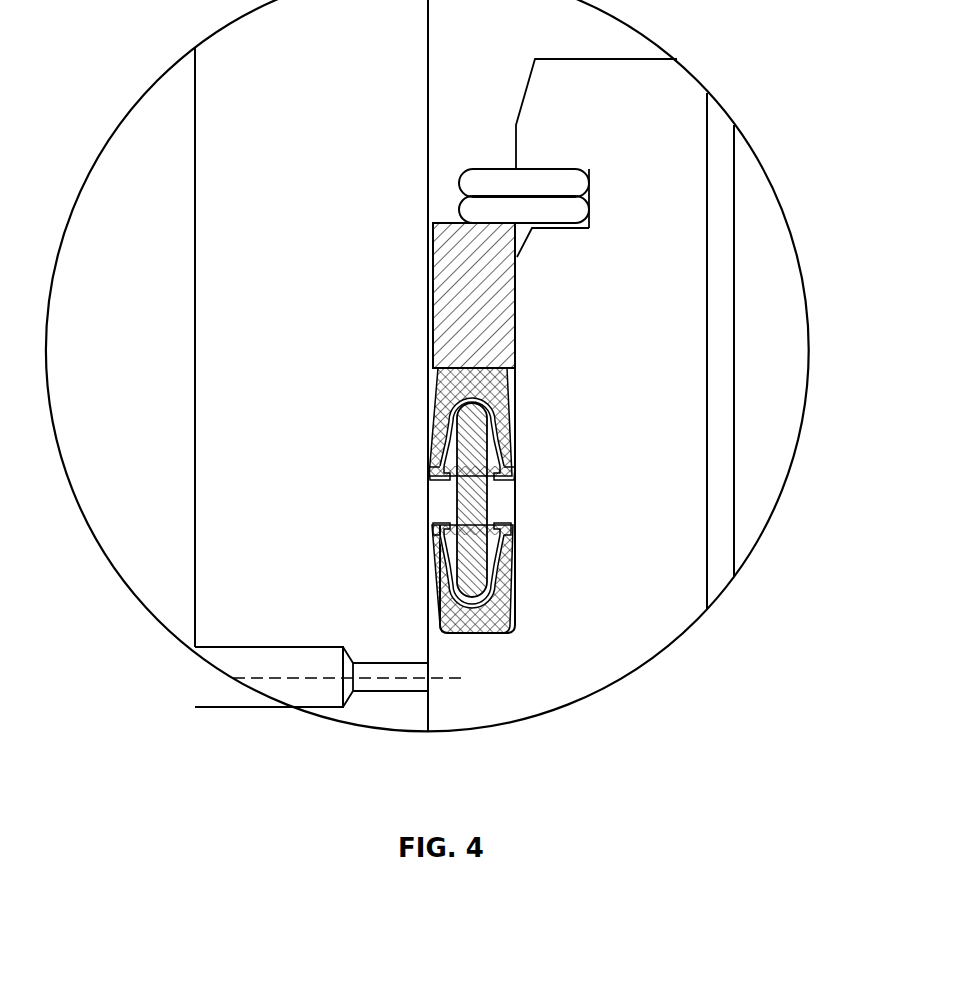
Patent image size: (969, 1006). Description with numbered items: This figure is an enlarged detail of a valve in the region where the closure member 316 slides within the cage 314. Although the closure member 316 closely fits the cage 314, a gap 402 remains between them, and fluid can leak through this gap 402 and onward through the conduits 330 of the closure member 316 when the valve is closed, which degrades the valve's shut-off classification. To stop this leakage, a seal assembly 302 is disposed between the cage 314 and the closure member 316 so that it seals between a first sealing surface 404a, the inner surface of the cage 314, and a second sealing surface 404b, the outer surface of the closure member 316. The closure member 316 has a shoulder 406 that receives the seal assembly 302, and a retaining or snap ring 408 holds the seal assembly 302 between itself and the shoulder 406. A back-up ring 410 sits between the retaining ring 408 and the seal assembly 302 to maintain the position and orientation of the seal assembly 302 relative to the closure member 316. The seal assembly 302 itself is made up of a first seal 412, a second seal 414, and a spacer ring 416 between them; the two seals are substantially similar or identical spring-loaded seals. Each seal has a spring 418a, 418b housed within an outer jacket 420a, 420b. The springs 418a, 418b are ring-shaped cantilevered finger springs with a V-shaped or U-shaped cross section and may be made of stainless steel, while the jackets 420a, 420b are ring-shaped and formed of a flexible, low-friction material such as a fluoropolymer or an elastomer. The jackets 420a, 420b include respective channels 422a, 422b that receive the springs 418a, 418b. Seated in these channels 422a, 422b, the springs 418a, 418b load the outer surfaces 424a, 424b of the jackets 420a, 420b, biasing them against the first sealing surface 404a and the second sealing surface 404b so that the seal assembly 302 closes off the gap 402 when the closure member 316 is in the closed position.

The seal assembly 302 is at (437, 195).
The cage 314 is at (228, 290).
The closure member 316 is at (652, 97).
The conduits 330 is at (720, 273).
The gap 402 is at (463, 719).
The first sealing surface 404a is at (428, 85).
The second sealing surface 404b is at (428, 702).
The shoulder 406 is at (482, 636).
The retaining ring 408 is at (497, 182).
The back-up ring 410 is at (437, 304).
The first seal 412 is at (468, 522).
The second seal 414 is at (511, 394).
The spacer ring 416 is at (487, 495).
The spring 418a is at (503, 560).
The spring 418b is at (500, 447).
The outer jacket 420a is at (437, 617).
The outer jacket 420b is at (440, 376).
The channel 422a is at (437, 540).
The channel 422b is at (440, 466).
The outer surface 424a is at (502, 597).
The outer surface 424b is at (438, 420).